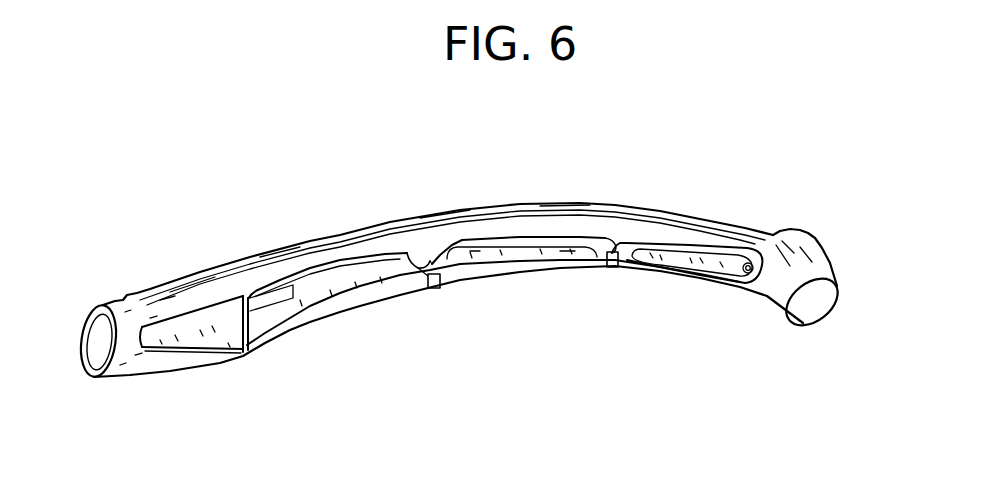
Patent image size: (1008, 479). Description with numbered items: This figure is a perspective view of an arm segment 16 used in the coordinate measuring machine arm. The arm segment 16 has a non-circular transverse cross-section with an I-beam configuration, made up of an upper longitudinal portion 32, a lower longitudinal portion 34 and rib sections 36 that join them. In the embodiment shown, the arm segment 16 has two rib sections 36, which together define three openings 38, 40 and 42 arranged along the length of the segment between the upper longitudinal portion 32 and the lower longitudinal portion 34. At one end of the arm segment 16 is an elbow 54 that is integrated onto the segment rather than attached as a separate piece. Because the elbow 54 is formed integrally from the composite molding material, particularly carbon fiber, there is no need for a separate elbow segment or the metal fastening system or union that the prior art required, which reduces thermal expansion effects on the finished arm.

The arm segment 16 is at (496, 184).
The upper longitudinal portion 32 is at (596, 226).
The lower longitudinal portion 34 is at (658, 277).
The rib section 36 is at (409, 258).
The opening 38 is at (323, 289).
The opening 40 is at (538, 247).
The opening 42 is at (722, 258).
The elbow 54 is at (815, 250).